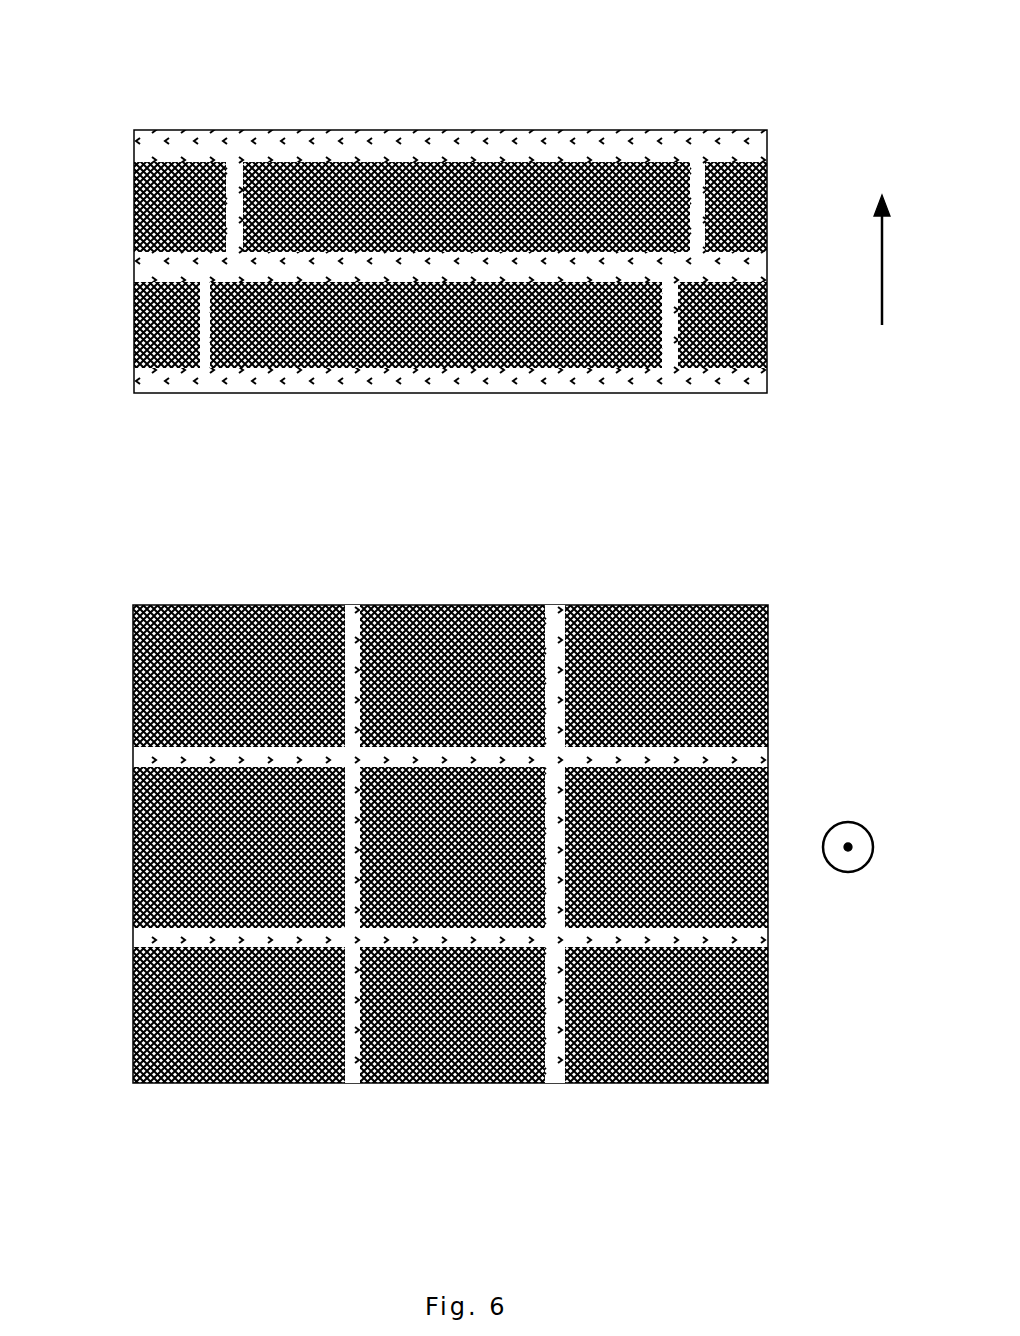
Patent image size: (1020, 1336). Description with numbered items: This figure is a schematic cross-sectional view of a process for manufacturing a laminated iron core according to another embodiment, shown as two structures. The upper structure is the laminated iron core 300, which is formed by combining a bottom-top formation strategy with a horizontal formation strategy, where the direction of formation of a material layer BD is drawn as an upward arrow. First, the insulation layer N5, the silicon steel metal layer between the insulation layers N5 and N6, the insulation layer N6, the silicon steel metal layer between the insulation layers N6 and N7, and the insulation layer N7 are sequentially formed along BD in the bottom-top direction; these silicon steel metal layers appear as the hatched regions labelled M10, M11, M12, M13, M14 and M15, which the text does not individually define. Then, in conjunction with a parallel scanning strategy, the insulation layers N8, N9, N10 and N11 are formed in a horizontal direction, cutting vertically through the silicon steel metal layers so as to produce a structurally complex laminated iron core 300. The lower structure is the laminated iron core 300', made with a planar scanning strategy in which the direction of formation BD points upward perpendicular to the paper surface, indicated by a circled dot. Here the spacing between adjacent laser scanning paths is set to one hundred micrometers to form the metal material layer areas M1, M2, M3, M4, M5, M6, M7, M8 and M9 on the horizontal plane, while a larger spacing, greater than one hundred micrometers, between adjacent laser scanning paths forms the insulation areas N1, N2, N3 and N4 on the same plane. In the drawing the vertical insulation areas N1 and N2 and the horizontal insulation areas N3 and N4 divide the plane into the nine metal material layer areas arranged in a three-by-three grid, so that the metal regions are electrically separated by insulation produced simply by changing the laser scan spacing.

The laminated iron core 300 is at (404, 196).
The laminated iron core 300' is at (405, 783).
The metal material layer area M1 is at (212, 640).
The metal material layer area M2 is at (450, 612).
The metal material layer area M3 is at (640, 640).
The metal material layer area M4 is at (145, 860).
The metal material layer area M5 is at (418, 818).
The metal material layer area M6 is at (768, 880).
The metal material layer area M7 is at (252, 1048).
The metal material layer area M8 is at (458, 1075).
The metal material layer area M9 is at (673, 1057).
The metal region M10 is at (150, 322).
The metal region M11 is at (160, 232).
The metal region M12 is at (740, 218).
The metal region M13 is at (765, 305).
The metal region M14 is at (482, 165).
The metal region M15 is at (445, 360).
The insulation area N1 is at (354, 600).
The insulation area N2 is at (558, 605).
The insulation area N3 is at (770, 757).
The insulation area N4 is at (768, 935).
The insulation layer N5 is at (745, 380).
The insulation layer N6 is at (740, 266).
The insulation layer N7 is at (745, 148).
The insulation layer N8 is at (233, 195).
The insulation layer N9 is at (697, 190).
The insulation layer N10 is at (205, 350).
The insulation layer N11 is at (667, 345).
The direction of formation of a material layer BD is at (878, 533).